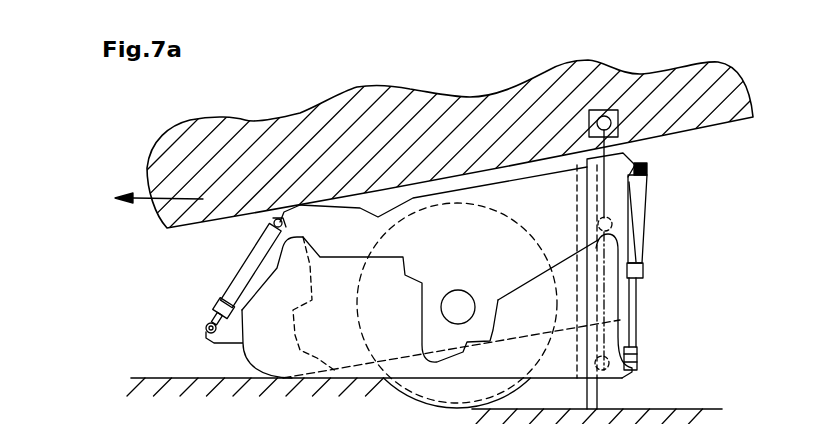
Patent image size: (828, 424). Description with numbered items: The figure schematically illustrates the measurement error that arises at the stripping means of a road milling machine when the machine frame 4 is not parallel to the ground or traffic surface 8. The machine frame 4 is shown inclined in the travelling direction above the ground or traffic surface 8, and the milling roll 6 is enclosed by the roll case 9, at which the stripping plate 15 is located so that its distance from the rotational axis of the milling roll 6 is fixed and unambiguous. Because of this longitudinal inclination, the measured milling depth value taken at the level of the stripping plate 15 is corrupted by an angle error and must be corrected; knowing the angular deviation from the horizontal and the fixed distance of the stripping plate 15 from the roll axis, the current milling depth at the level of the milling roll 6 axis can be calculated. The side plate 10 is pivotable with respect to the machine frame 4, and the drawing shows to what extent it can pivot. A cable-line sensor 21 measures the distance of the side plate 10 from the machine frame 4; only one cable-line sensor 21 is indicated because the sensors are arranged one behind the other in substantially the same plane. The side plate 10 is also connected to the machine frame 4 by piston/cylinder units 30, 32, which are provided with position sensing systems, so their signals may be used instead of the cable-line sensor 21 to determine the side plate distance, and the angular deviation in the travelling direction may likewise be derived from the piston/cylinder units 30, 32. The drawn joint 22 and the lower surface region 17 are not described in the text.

The machine frame 4 is at (627, 100).
The cable-line sensor 21 is at (593, 110).
The roll case 9 is at (548, 205).
The piston/cylinder unit 32 is at (640, 225).
The pivot joint 22 is at (618, 224).
The stripping plate 15 is at (620, 320).
The lowered ground surface 17 is at (685, 409).
The ground or traffic surface 8 is at (153, 376).
The milling roll 6 is at (447, 393).
The side plate 10 is at (352, 291).
The piston/cylinder unit 30 is at (238, 273).